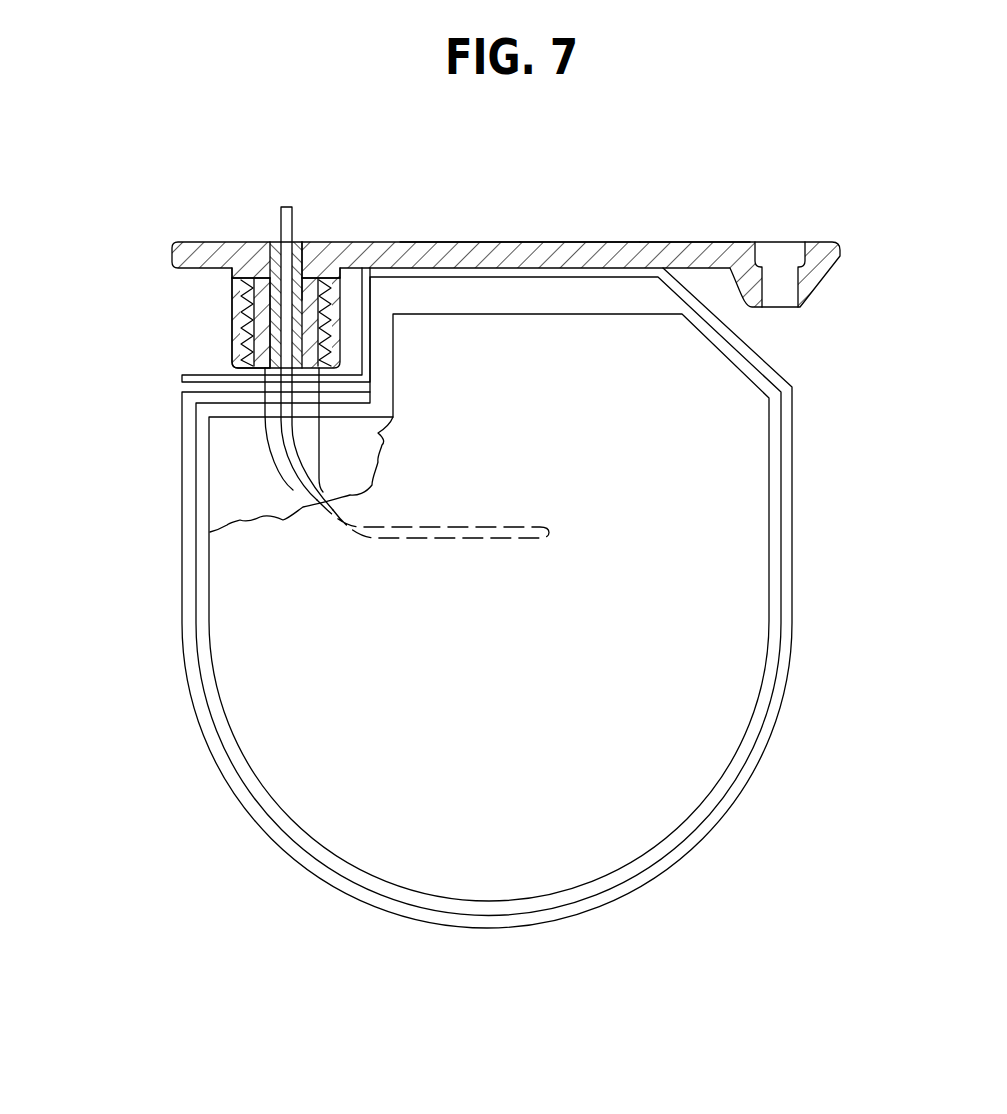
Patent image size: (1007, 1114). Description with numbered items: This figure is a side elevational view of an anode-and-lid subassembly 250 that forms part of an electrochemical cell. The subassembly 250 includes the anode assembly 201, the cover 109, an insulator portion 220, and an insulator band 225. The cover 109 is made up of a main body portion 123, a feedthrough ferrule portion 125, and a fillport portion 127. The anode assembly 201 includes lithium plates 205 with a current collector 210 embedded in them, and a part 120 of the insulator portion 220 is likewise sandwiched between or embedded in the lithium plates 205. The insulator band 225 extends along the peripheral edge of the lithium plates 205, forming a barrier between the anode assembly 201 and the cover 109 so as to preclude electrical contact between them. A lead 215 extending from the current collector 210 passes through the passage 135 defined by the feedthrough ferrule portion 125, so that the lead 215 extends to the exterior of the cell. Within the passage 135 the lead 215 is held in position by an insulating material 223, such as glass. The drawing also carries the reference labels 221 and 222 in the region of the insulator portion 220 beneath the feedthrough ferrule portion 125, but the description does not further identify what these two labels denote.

The cover 109 is at (383, 243).
The part of insulator portion 120 is at (270, 458).
The main body portion 123 is at (538, 238).
The feedthrough ferrule portion 125 is at (262, 240).
The fillport portion 127 is at (802, 235).
The passage 135 is at (305, 252).
The anode assembly 201 is at (783, 370).
The lithium plates 205 is at (210, 633).
The current collector 210 is at (317, 503).
The lead 215 is at (278, 235).
The insulator portion 220 is at (215, 340).
The nut 221 is at (232, 292).
The washer 222 is at (248, 282).
The insulating material 223 is at (298, 285).
The insulator band 225 is at (452, 242).
The anode-and-lid subassembly 250 is at (652, 197).